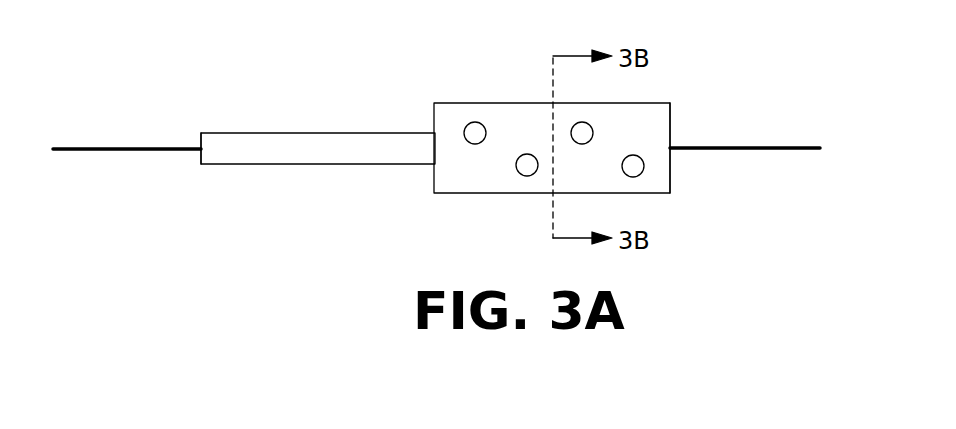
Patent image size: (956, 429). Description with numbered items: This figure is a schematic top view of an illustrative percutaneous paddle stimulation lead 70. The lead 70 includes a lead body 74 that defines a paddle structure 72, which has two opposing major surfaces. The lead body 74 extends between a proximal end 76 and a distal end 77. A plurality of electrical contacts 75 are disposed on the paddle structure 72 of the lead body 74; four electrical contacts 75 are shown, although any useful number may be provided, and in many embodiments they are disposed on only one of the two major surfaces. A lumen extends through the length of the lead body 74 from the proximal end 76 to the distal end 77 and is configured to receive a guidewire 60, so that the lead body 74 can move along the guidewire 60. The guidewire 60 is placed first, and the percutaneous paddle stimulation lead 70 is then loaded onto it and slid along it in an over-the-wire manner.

The guidewire 60 is at (730, 147).
The percutaneous paddle stimulation lead 70 is at (380, 232).
The paddle structure 72 is at (517, 103).
The lead body 74 is at (293, 133).
The electrical contacts 75 is at (531, 190).
The proximal end 76 is at (200, 161).
The distal end 77 is at (672, 170).